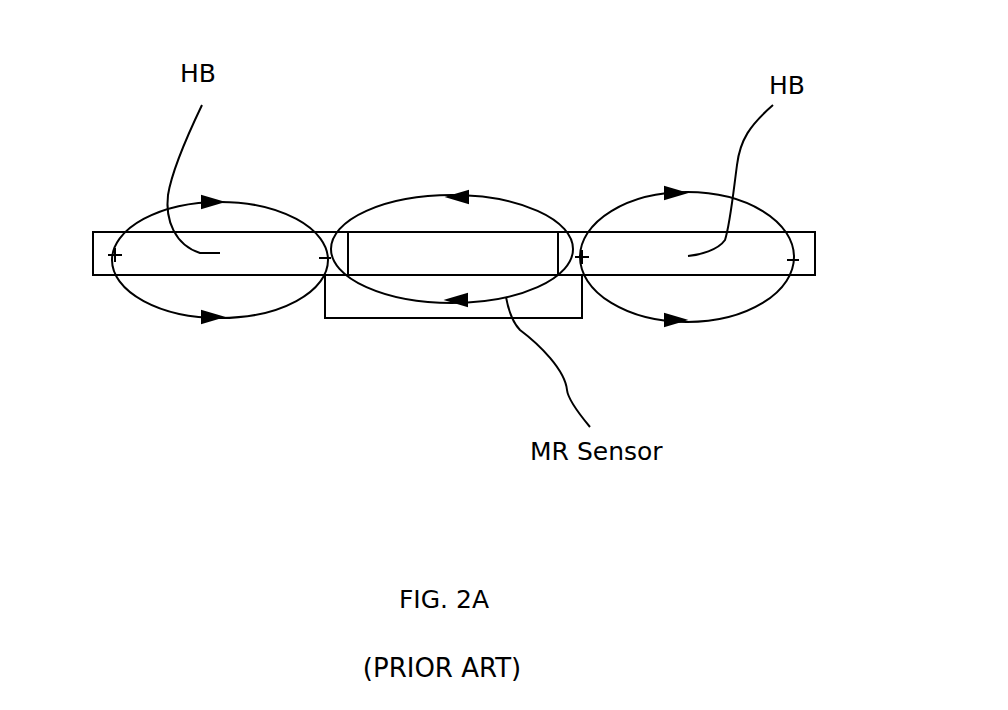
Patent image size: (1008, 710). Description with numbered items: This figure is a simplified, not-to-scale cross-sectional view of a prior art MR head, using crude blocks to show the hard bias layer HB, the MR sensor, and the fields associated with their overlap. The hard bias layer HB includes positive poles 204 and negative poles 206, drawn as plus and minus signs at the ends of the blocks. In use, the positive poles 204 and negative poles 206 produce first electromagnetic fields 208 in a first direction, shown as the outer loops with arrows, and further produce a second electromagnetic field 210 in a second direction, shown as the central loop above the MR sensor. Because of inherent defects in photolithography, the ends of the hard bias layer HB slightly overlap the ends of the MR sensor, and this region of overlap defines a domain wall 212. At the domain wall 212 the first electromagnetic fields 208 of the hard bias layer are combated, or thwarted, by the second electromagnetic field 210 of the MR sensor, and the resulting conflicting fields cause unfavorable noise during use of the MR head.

The positive poles 204 is at (93, 248).
The negative poles 206 is at (349, 245).
The first electromagnetic fields 208 is at (217, 203).
The second electromagnetic field 210 is at (456, 194).
The domain wall 212 is at (338, 337).